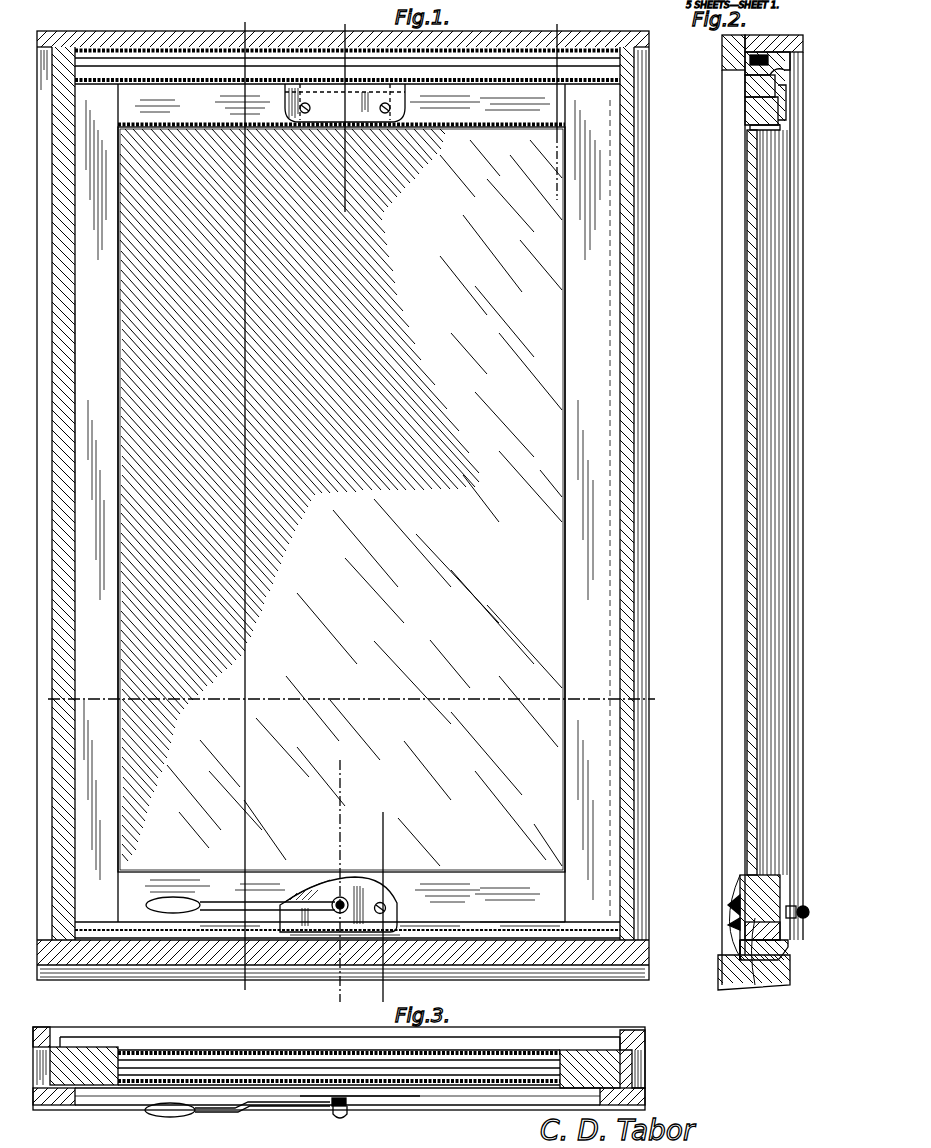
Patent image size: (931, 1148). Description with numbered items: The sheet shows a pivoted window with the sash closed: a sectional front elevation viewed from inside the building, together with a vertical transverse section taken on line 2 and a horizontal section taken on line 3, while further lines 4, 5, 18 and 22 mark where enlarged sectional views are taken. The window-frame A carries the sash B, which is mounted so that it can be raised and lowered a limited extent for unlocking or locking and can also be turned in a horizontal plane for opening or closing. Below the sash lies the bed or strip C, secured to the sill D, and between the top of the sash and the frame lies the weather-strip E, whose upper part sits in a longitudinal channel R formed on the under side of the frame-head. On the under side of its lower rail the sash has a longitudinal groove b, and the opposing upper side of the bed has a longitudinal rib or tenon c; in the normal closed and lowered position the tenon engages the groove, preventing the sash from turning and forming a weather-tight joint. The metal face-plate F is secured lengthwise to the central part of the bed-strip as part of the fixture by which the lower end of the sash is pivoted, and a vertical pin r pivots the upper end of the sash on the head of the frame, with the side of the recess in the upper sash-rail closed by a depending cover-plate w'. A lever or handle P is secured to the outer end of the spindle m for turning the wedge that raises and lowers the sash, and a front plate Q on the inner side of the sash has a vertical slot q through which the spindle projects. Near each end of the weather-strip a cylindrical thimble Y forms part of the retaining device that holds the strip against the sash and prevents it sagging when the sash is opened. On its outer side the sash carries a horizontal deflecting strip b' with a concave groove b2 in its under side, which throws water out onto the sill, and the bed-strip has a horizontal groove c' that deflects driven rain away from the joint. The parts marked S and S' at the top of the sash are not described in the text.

In FIG. 1, the window-frame A is at (722, 472).
In FIG. 2, the window-frame A is at (762, 510).
In FIG. 3, the window-frame A is at (660, 1022).
In FIG. 1, the sash B is at (80, 402).
In FIG. 2, the sash B is at (780, 880).
In FIG. 3, the sash B is at (90, 1048).
In FIG. 1, the bed or strip C is at (540, 932).
In FIG. 2, the bed or strip C is at (780, 958).
In FIG. 1, the sill D is at (575, 960).
In FIG. 2, the sill D is at (717, 977).
In FIG. 1, the weather-strip E is at (215, 84).
In FIG. 2, the weather-strip E is at (775, 80).
In FIG. 1, the cylindrical thimble Y is at (341, 483).
In FIG. 1, the lever or handle P is at (230, 895).
In FIG. 2, the lever or handle P is at (809, 912).
In FIG. 1, the front plate Q is at (318, 885).
In FIG. 2, the front plate Q is at (782, 925).
In FIG. 3, the front plate Q is at (400, 1098).
In FIG. 1, the vertical slot q is at (343, 897).
In FIG. 1, the face-plate F is at (420, 925).
In FIG. 3, the face-plate F is at (248, 1112).
In FIG. 2, the longitudinal channel R is at (787, 56).
In FIG. 2, the vertical pin r is at (762, 55).
In FIG. 2, the sash head S is at (740, 103).
In FIG. 2, the sash head strip S' is at (808, 104).
In FIG. 1, the depending cover-plate w' is at (345, 103).
In FIG. 2, the depending cover-plate w' is at (795, 138).
In FIG. 2, the spindle m is at (790, 908).
In FIG. 3, the spindle m is at (342, 1110).
In FIG. 2, the longitudinal groove b is at (735, 911).
In FIG. 2, the deflecting strip b' is at (717, 899).
In FIG. 3, the deflecting strip b' is at (369, 1045).
In FIG. 2, the longitudinal concave groove b2 is at (730, 924).
In FIG. 2, the longitudinal rib or tenon c is at (760, 961).
In FIG. 2, the horizontal groove c' is at (716, 950).
In FIG. 1, the section line 2 2 is at (244, 506).
In FIG. 1, the section line 3 3 is at (350, 700).
In FIG. 1, the section line 4 4 is at (339, 111).
In FIG. 1, the section line 5 5 is at (339, 875).
In FIG. 1, the section line 18 18 is at (379, 902).
In FIG. 1, the section line 22 22 is at (547, 103).